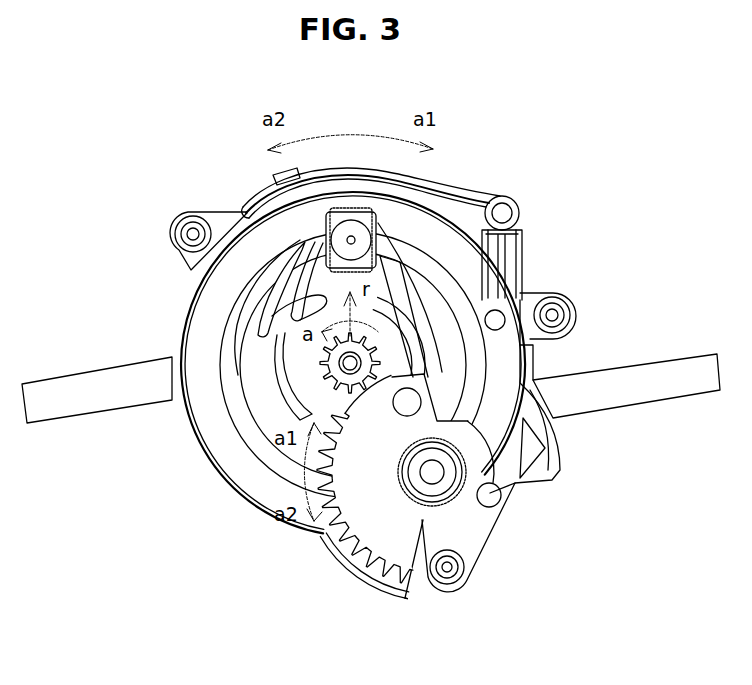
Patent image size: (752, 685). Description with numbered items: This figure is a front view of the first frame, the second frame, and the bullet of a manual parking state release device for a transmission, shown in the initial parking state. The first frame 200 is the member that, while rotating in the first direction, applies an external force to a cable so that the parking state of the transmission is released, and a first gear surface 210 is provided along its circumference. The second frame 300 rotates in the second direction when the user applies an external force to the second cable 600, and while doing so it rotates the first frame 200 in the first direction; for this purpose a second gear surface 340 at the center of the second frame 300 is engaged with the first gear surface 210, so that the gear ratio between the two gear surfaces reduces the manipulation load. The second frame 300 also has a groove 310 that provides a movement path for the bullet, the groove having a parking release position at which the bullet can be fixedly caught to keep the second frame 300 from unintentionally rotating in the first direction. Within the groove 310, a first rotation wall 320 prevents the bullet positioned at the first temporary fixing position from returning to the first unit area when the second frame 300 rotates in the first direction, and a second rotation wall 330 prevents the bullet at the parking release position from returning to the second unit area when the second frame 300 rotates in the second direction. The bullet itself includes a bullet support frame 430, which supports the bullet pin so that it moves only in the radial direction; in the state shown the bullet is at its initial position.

The first frame 200 is at (383, 533).
The first gear surface 210 is at (337, 543).
The second frame 300 is at (283, 232).
The groove 310 is at (238, 410).
The first rotation wall 320 is at (210, 268).
The second rotation wall 330 is at (263, 331).
The second gear surface 340 is at (378, 347).
The bullet support frame 430 is at (376, 228).
The second cable 600 is at (505, 262).